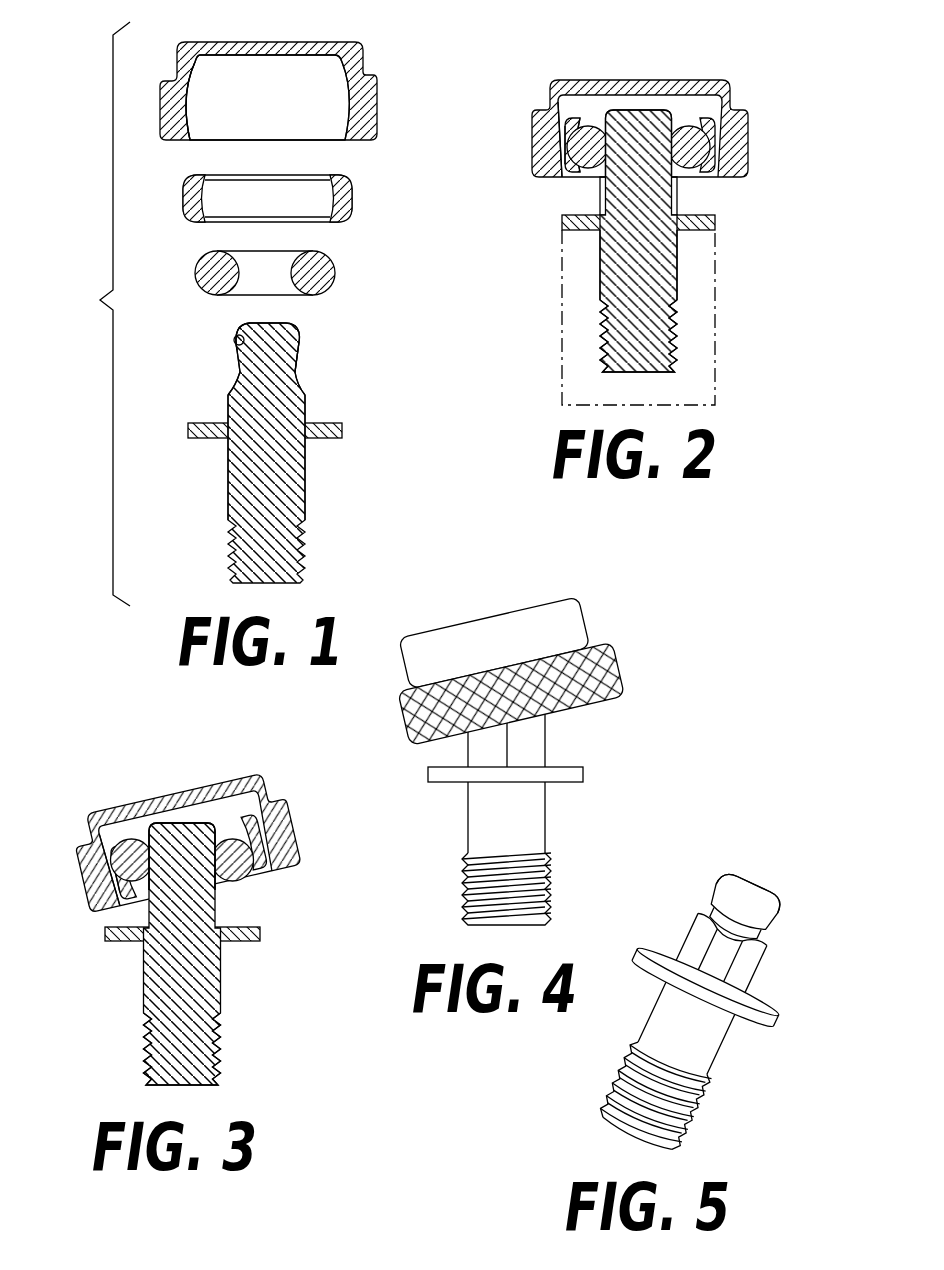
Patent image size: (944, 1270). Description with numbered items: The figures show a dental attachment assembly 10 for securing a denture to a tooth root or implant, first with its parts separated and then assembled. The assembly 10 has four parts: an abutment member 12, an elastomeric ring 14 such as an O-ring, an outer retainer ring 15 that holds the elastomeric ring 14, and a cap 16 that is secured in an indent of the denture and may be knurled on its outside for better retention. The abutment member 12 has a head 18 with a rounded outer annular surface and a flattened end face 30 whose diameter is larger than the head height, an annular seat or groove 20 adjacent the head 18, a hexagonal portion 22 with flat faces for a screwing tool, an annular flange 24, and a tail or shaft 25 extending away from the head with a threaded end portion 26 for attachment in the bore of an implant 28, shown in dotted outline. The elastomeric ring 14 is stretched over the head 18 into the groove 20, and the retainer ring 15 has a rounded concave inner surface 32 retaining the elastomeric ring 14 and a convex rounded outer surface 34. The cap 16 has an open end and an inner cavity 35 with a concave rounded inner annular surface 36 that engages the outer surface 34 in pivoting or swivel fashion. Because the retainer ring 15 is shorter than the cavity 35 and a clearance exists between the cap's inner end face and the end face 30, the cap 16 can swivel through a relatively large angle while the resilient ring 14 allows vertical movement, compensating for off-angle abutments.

In FIG. 1, the dental attachment assembly 10 is at (95, 314).
In FIG. 1, the abutment member 12 is at (265, 438).
In FIG. 2, the abutment member 12 is at (633, 203).
In FIG. 3, the abutment member 12 is at (188, 908).
In FIG. 4, the abutment member 12 is at (503, 852).
In FIG. 5, the abutment member 12 is at (725, 987).
In FIG. 1, the elastomeric ring 14 is at (332, 265).
In FIG. 2, the elastomeric ring 14 is at (702, 125).
In FIG. 3, the elastomeric ring 14 is at (240, 880).
In FIG. 1, the outer retainer ring 15 is at (352, 200).
In FIG. 2, the outer retainer ring 15 is at (735, 150).
In FIG. 3, the outer retainer ring 15 is at (286, 850).
In FIG. 1, the cap 16 is at (377, 92).
In FIG. 2, the cap 16 is at (599, 82).
In FIG. 3, the cap 16 is at (255, 777).
In FIG. 4, the cap 16 is at (502, 629).
In FIG. 1, the head 18 is at (290, 328).
In FIG. 5, the head 18 is at (745, 893).
In FIG. 1, the annular seat or groove 20 is at (296, 360).
In FIG. 3, the annular seat or groove 20 is at (157, 820).
In FIG. 5, the annular seat or groove 20 is at (718, 902).
In FIG. 1, the hexagonal portion 22 is at (300, 400).
In FIG. 2, the hexagonal portion 22 is at (600, 200).
In FIG. 4, the hexagonal portion 22 is at (536, 752).
In FIG. 5, the hexagonal portion 22 is at (685, 948).
In FIG. 1, the annular flange 24 is at (345, 431).
In FIG. 2, the annular flange 24 is at (693, 215).
In FIG. 3, the annular flange 24 is at (105, 934).
In FIG. 4, the annular flange 24 is at (585, 776).
In FIG. 5, the annular flange 24 is at (783, 1018).
In FIG. 1, the tail or shaft 25 is at (283, 492).
In FIG. 2, the tail or shaft 25 is at (661, 279).
In FIG. 4, the tail or shaft 25 is at (536, 831).
In FIG. 5, the tail or shaft 25 is at (716, 1058).
In FIG. 2, the threaded end portion 26 is at (600, 349).
In FIG. 3, the threaded end portion 26 is at (145, 1053).
In FIG. 4, the threaded end portion 26 is at (525, 890).
In FIG. 5, the threaded end portion 26 is at (689, 1118).
In FIG. 2, the implant 28 is at (718, 312).
In FIG. 1, the flattened end face 30 is at (245, 322).
In FIG. 2, the flattened end face 30 is at (641, 110).
In FIG. 3, the flattened end face 30 is at (183, 827).
In FIG. 5, the flattened end face 30 is at (738, 876).
In FIG. 1, the concave inner surface 32 is at (330, 178).
In FIG. 1, the convex outer surface 34 is at (340, 218).
In FIG. 2, the convex outer surface 34 is at (566, 150).
In FIG. 1, the inner cavity 35 is at (276, 107).
In FIG. 2, the inner cavity 35 is at (585, 127).
In FIG. 3, the inner cavity 35 is at (90, 857).
In FIG. 1, the concave inner annular surface 36 is at (184, 95).
In FIG. 2, the concave inner annular surface 36 is at (568, 102).
In FIG. 3, the concave inner annular surface 36 is at (263, 815).